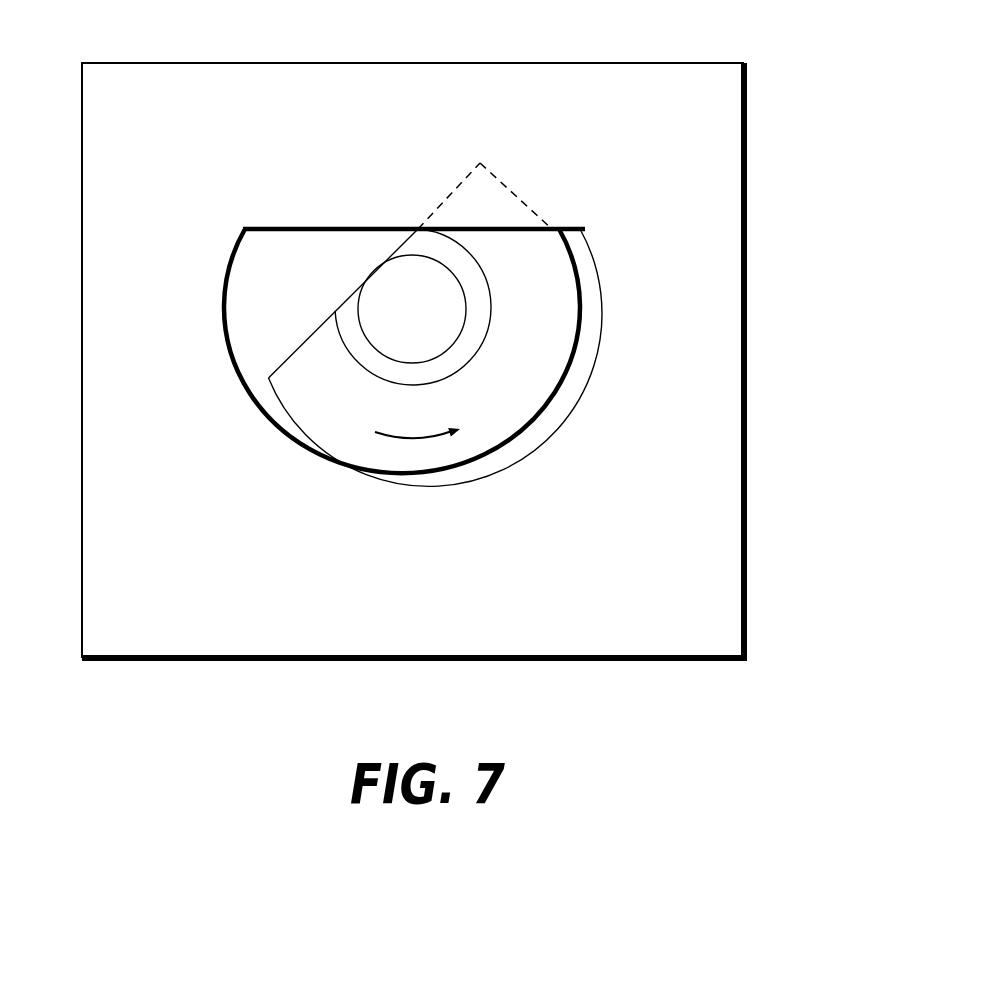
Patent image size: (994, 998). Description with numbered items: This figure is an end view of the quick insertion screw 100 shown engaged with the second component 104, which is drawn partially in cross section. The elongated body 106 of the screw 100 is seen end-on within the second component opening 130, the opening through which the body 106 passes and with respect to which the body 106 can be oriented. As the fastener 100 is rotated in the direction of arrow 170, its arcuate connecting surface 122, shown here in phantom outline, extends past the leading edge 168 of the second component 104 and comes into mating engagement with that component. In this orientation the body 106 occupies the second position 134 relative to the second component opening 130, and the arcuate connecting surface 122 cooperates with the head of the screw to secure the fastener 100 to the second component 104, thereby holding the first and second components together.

The insertion screw 100 is at (467, 334).
The second component 104 is at (747, 475).
The elongated body 106 is at (494, 456).
The arcuate connecting surface 122 is at (535, 119).
The second component opening 130 is at (282, 268).
The second position 134 is at (507, 175).
The leading edge 168 is at (585, 230).
The arrow 170 is at (410, 438).